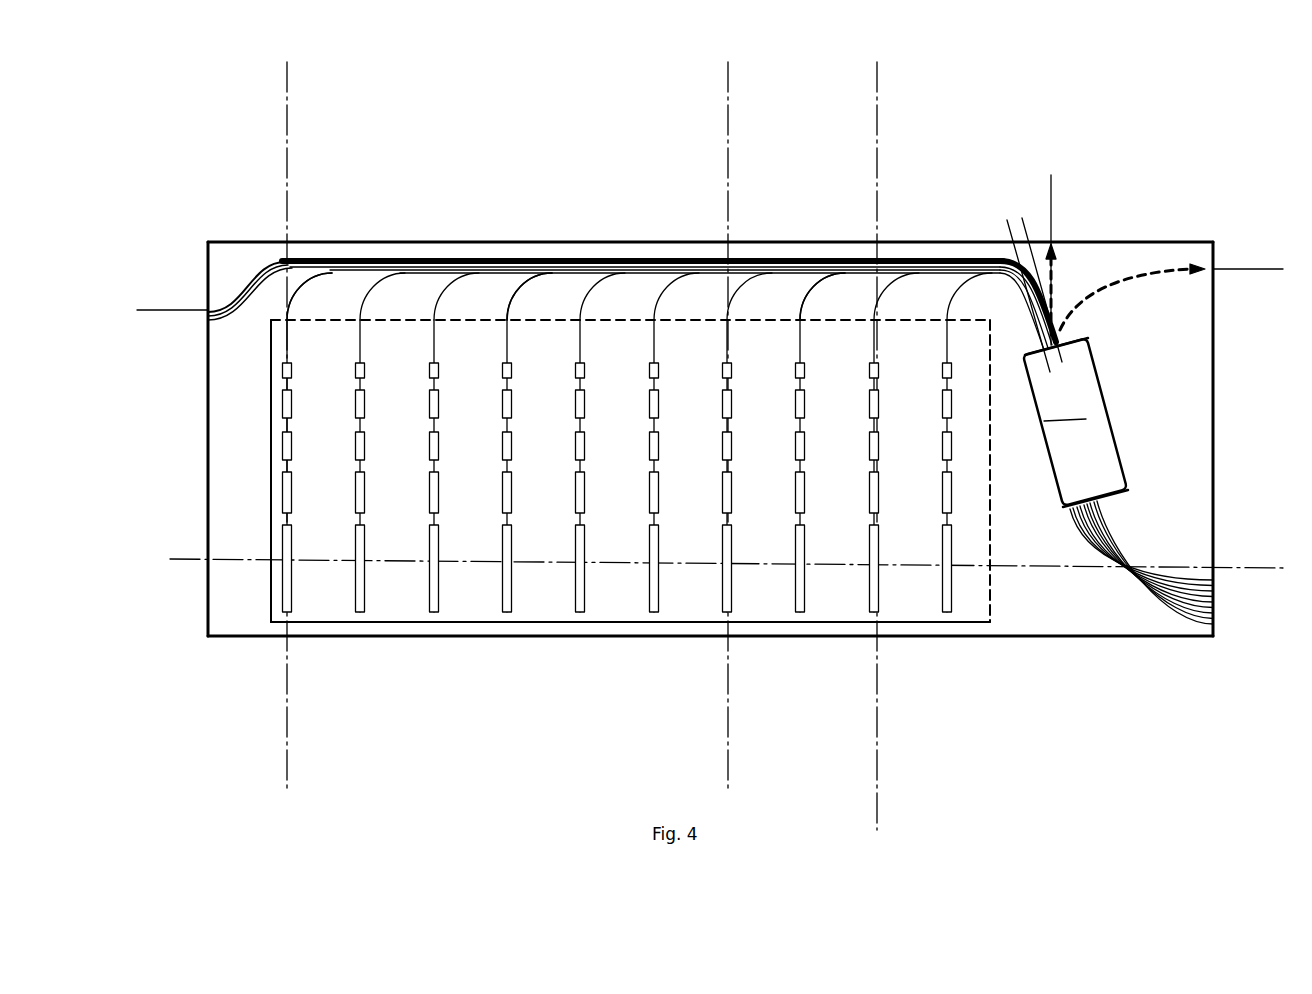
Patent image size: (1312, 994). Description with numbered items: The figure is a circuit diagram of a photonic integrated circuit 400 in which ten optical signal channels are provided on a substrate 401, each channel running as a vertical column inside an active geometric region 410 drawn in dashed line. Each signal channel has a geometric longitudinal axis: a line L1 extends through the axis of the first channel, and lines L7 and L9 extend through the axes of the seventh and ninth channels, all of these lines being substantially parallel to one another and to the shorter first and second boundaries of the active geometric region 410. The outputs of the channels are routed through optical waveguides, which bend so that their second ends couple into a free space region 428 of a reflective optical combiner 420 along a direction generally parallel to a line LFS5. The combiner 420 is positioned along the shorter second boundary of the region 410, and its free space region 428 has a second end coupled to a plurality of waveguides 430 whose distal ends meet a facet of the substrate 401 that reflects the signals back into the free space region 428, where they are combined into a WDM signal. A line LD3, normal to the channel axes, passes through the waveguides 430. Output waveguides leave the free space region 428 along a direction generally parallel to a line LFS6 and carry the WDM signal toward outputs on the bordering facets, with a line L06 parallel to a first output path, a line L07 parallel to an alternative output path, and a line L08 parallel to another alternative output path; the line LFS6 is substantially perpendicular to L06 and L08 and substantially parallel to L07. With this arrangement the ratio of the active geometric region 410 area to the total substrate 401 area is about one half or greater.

The photonic integrated circuit 400 is at (476, 126).
The substrate 401 is at (1056, 618).
The active geometric region 410 is at (345, 632).
The optical combiner 420 is at (1162, 372).
The free space region 428 is at (1075, 422).
The waveguides 430 is at (1136, 604).
The line L1 is at (292, 104).
The line L7 is at (733, 106).
The line L9 is at (882, 110).
The line LO6 L06 is at (154, 309).
The line LO7 L07 is at (1056, 196).
The line LO8 L08 is at (1242, 268).
The line LD3 is at (1240, 570).
The line LFS5 is at (1006, 222).
The line LFS6 is at (1024, 216).